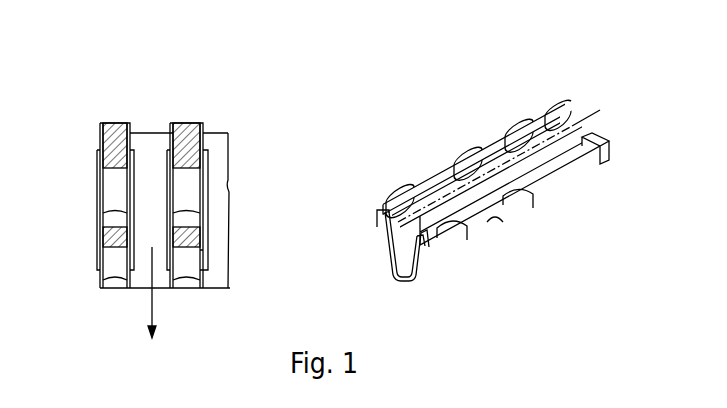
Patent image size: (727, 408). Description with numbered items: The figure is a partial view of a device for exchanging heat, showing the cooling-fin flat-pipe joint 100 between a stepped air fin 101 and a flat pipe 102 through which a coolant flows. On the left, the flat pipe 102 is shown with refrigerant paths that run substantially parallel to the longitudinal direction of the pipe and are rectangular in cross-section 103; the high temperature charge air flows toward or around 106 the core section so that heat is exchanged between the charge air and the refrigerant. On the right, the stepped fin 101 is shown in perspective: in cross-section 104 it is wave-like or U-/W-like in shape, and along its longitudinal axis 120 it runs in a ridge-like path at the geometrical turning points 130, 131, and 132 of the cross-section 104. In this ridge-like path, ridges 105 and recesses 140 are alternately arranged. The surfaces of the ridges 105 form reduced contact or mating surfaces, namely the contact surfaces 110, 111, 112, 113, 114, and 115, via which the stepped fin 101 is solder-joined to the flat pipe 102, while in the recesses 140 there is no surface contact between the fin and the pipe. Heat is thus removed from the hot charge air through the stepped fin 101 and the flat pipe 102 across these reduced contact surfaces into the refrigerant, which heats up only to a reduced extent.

The cooling-fin flat-pipe joint 100 is at (180, 88).
The stepped air fin 101 is at (142, 285).
The flat pipe 102 is at (104, 125).
The cross-section of refrigerant path 103 is at (108, 194).
The cross-section of stepped fin 104 is at (388, 240).
The ridge 105 is at (520, 130).
The charge air flow direction 106 is at (157, 338).
The contact surface 110 is at (170, 132).
The contact surface 111 is at (205, 218).
The contact surface 112 is at (186, 288).
The contact surface 113 is at (108, 145).
The contact surface 114 is at (108, 210).
The contact surface 115 is at (106, 284).
The longitudinal axis 120 is at (599, 114).
The geometrical turning point 130 is at (432, 262).
The geometrical turning point 131 is at (396, 283).
The geometrical turning point 132 is at (377, 213).
The recess 140 is at (494, 224).